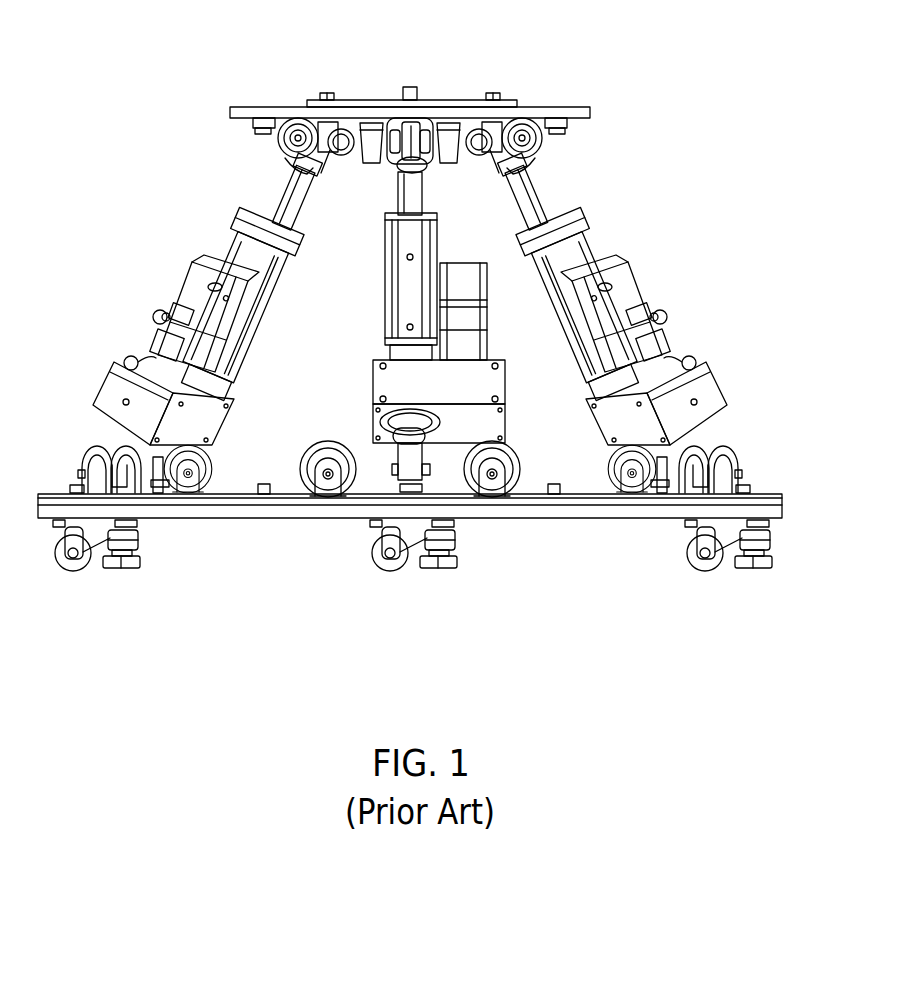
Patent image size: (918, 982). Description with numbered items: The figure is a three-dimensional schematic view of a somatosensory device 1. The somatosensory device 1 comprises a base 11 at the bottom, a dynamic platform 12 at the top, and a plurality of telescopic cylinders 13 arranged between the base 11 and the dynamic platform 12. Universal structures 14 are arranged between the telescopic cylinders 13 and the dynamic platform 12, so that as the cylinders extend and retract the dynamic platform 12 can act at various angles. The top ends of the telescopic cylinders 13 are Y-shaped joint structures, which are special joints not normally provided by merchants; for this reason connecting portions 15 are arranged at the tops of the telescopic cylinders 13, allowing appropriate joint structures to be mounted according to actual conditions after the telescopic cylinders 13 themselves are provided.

The somatosensory device 1 is at (626, 95).
The base 11 is at (770, 492).
The dynamic platform 12 is at (520, 106).
The telescopic cylinders 13 is at (190, 300).
The universal structures 14 is at (278, 146).
The connecting portions 15 is at (285, 171).